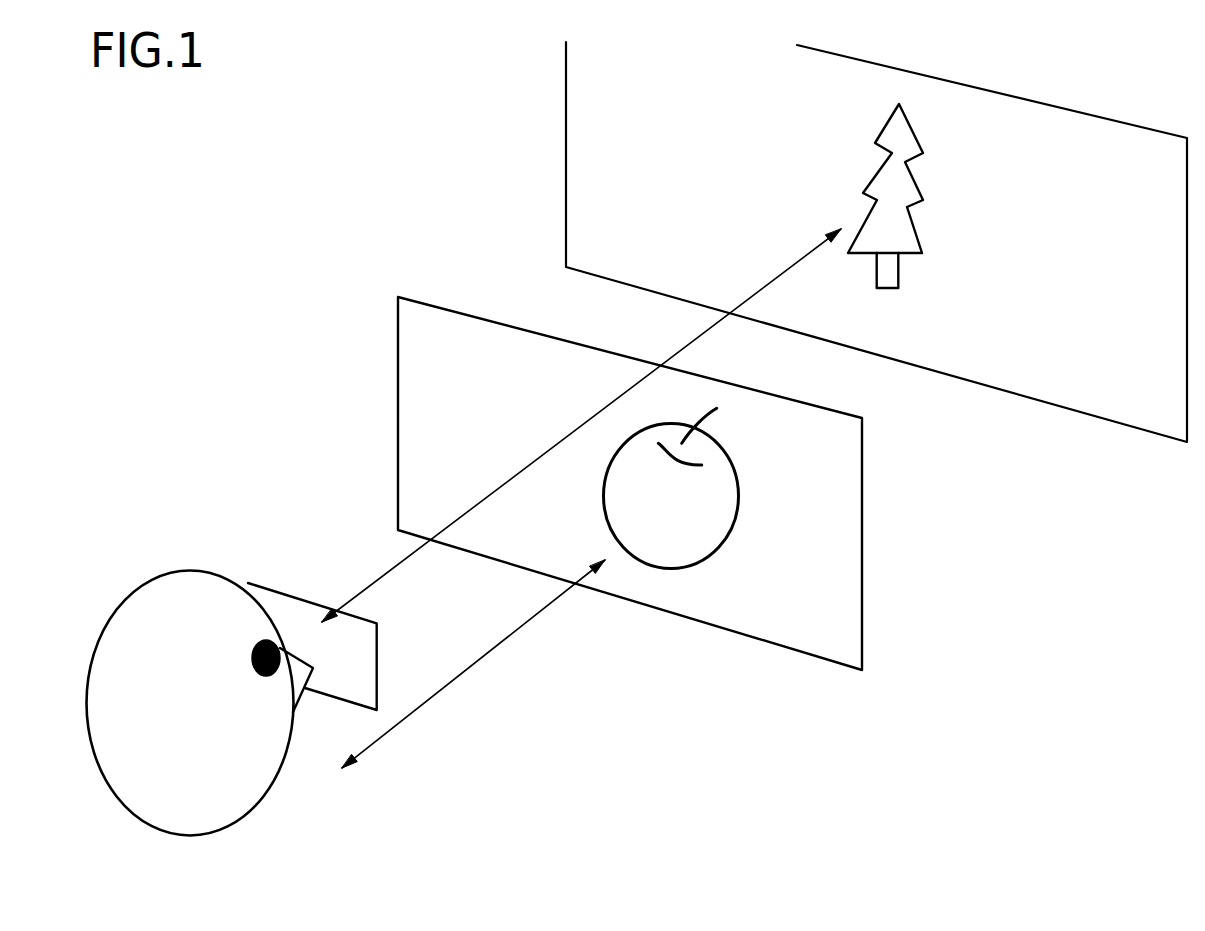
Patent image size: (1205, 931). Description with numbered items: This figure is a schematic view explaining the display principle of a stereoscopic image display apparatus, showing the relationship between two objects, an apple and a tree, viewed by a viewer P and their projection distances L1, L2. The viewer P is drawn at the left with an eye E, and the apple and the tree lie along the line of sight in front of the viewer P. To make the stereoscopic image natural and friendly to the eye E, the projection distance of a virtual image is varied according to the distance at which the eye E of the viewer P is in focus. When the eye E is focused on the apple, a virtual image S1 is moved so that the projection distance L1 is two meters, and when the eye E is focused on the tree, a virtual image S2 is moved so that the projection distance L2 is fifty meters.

The viewer P is at (255, 802).
The eye E is at (267, 640).
The virtual image S1 is at (733, 623).
The virtual image S2 is at (1026, 385).
The projection distance L1 is at (473, 664).
The projection distance L2 is at (581, 425).